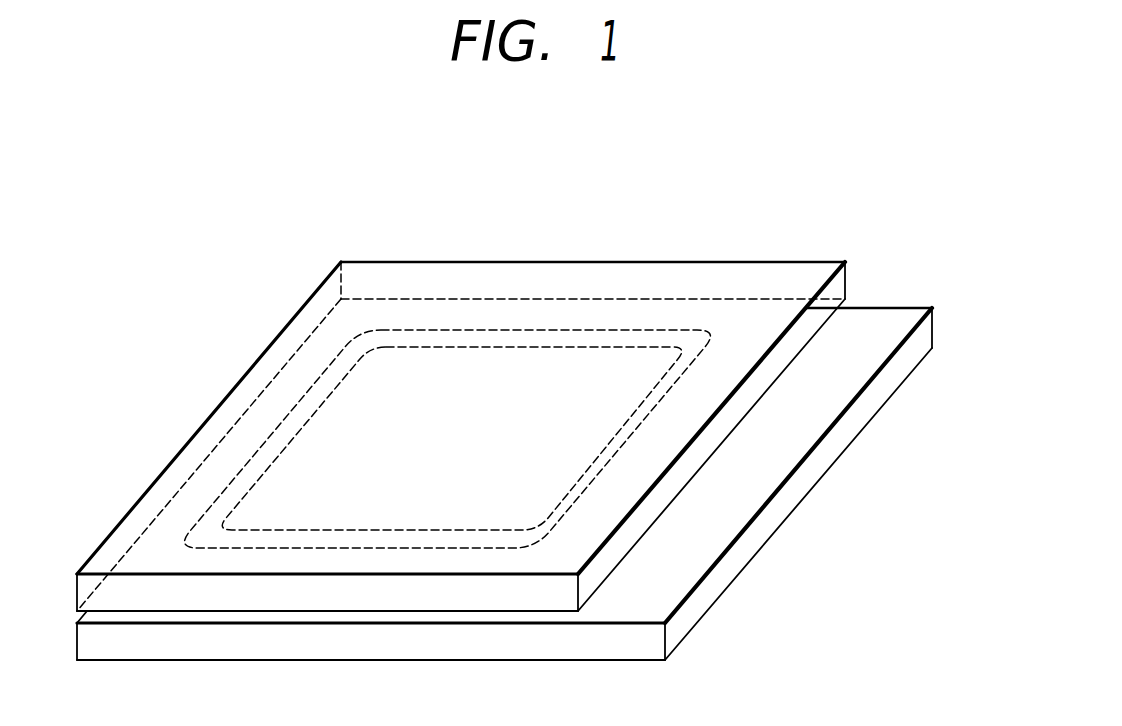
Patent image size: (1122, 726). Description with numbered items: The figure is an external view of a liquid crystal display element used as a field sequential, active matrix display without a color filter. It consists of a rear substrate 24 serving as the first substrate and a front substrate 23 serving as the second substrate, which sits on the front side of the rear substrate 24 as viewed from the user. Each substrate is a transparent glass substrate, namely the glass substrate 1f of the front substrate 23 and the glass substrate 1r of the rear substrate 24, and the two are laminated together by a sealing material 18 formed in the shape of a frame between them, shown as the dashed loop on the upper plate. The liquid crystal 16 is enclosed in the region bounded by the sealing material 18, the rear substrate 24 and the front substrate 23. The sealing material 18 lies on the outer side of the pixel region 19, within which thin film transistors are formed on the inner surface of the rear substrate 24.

The glass substrate 1f is at (750, 393).
The glass substrate 1r is at (722, 575).
The liquid crystal 16 is at (430, 390).
The sealing material 18 is at (575, 340).
The pixel region 19 is at (335, 432).
The front substrate 23 is at (847, 275).
The rear substrate 24 is at (932, 327).